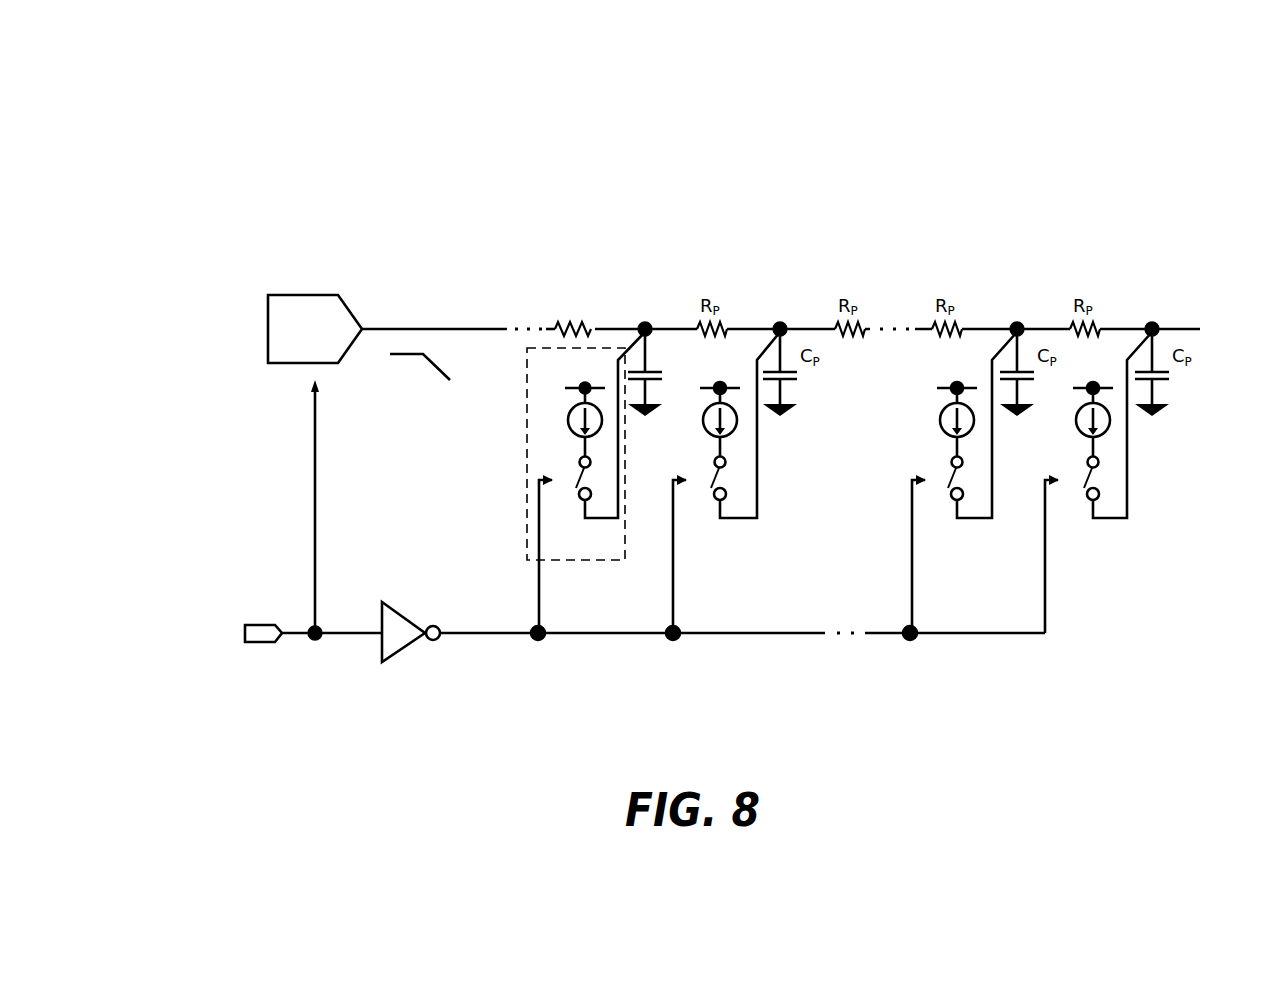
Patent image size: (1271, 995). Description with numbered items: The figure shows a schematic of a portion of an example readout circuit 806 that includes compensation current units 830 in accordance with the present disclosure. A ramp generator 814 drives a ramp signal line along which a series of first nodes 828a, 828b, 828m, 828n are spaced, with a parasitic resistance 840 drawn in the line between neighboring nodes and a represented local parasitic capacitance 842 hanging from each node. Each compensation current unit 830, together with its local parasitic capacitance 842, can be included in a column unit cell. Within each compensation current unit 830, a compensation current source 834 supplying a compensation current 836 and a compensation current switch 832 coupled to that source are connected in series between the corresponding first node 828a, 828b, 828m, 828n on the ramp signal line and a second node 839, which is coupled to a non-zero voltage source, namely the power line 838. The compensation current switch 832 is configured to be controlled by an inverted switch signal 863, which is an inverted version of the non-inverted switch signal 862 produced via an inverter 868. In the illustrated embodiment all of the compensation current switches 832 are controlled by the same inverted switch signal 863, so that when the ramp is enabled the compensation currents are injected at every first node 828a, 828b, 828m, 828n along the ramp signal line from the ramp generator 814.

The ramp signal distribution circuit 806 is at (343, 137).
The ramp generator 814 is at (307, 287).
The compensation current unit 830 is at (538, 347).
The parasitic resistor Rp 840 is at (581, 290).
The first node 828a is at (645, 322).
The first node 828b is at (780, 322).
The first node 828m is at (1017, 322).
The first node 828n is at (1152, 322).
The local parasitic capacitance 842 is at (661, 380).
The non-zero voltage source VDD 838 is at (555, 366).
The second node 839 is at (561, 386).
The compensation current source 834 is at (565, 404).
The current Is 836 is at (547, 428).
The compensation current switch 832 is at (575, 489).
The non-inverted switch signal Ramp_en 862 is at (114, 634).
The inverted switch signal Ramp_en_ 863 is at (505, 688).
The inverter 868 is at (388, 662).